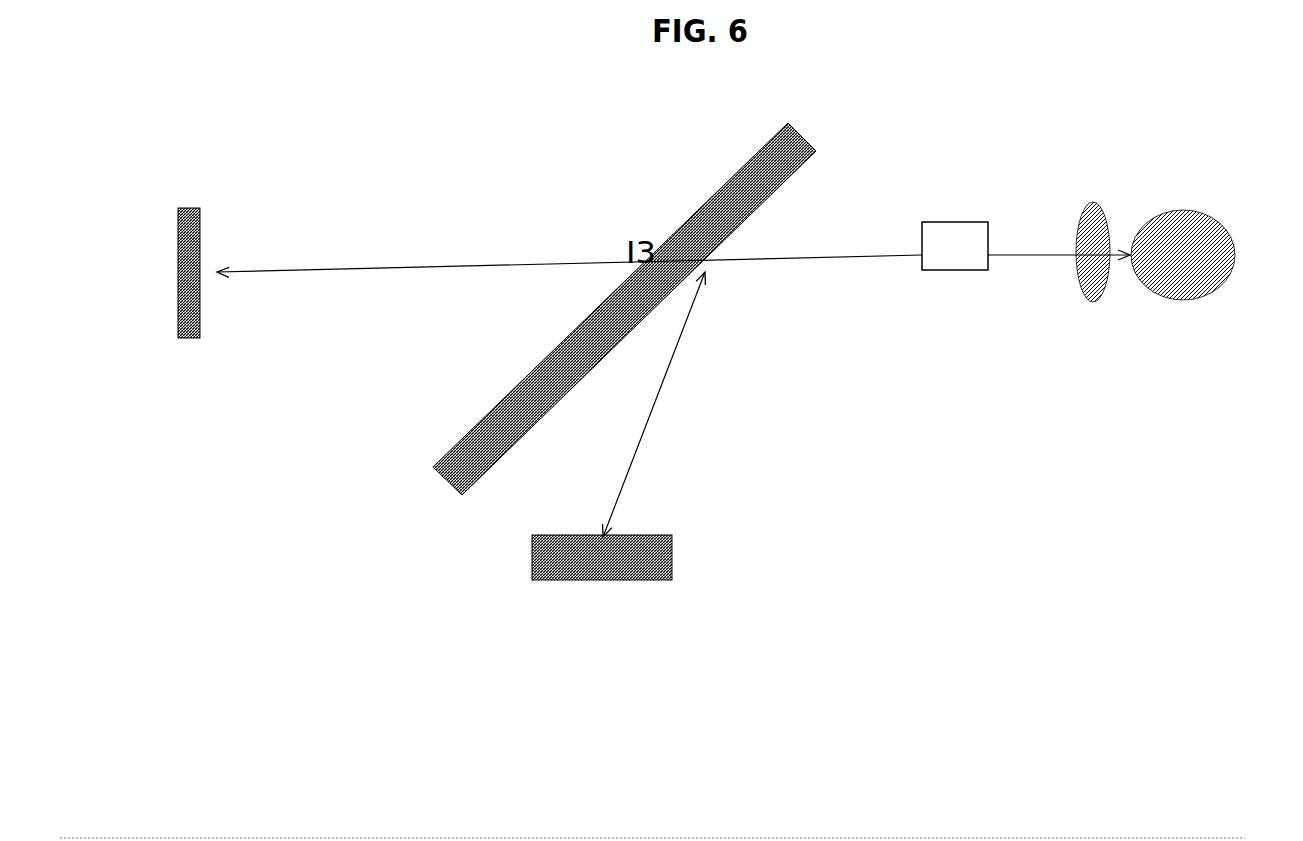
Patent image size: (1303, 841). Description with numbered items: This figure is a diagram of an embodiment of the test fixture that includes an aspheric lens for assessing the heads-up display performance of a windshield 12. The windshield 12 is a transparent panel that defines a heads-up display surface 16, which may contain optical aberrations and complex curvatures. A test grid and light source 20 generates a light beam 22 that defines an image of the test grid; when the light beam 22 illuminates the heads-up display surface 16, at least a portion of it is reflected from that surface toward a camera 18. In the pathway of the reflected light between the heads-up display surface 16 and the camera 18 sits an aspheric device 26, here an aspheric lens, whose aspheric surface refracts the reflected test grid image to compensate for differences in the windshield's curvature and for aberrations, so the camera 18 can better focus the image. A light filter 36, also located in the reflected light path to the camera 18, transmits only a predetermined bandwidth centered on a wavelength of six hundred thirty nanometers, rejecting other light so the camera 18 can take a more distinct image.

The windshield 12 is at (544, 338).
The heads-up display surface 16 is at (726, 283).
The camera 18 is at (1196, 205).
The test grid and light source 20 is at (690, 562).
The light beam 22 is at (678, 425).
The aspheric device 26 is at (1101, 192).
The light filter 36 is at (955, 246).